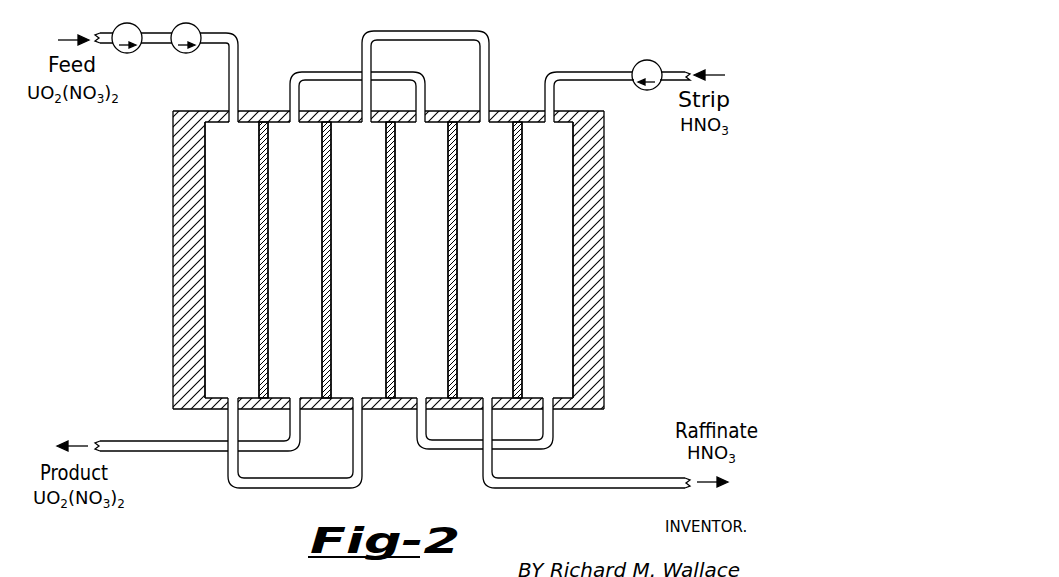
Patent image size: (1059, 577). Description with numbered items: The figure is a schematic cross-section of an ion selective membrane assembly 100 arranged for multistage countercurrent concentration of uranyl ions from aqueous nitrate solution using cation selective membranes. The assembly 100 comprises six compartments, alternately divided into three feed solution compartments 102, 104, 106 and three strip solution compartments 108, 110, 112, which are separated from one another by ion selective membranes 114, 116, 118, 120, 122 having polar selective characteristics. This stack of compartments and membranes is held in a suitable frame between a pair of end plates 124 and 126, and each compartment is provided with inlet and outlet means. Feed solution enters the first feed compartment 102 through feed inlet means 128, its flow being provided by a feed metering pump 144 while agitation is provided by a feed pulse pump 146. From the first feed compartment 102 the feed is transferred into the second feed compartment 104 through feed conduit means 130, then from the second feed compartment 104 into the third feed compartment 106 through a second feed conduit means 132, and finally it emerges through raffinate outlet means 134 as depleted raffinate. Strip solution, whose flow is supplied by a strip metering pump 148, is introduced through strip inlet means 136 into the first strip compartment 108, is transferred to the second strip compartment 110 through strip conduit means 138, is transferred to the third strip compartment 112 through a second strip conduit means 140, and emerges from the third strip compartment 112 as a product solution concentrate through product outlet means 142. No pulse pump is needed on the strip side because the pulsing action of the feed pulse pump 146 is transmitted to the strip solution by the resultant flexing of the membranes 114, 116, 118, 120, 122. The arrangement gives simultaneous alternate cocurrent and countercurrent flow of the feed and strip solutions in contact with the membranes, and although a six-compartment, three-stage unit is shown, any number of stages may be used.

The ion selective membrane assembly 100 is at (390, 276).
The first feed compartment 102 is at (250, 319).
The second feed compartment 104 is at (374, 319).
The third feed compartment 106 is at (502, 319).
The first strip compartment 108 is at (563, 356).
The second strip compartment 110 is at (436, 356).
The third strip compartment 112 is at (308, 356).
The ion selective membrane 114 is at (269, 188).
The ion selective membrane 116 is at (332, 188).
The ion selective membrane 118 is at (396, 188).
The ion selective membrane 120 is at (458, 188).
The ion selective membrane 122 is at (522, 188).
The end plate 124 is at (173, 268).
The end plate 126 is at (605, 268).
The feed inlet means 128 is at (214, 33).
The feed conduit means 130 is at (303, 488).
The second feed conduit means 132 is at (423, 31).
The raffinate outlet means 134 is at (534, 488).
The strip inlet means 136 is at (585, 72).
The strip conduit means 138 is at (504, 450).
The second strip conduit means 140 is at (313, 72).
The product outlet means 142 is at (167, 452).
The feed metering pump 144 is at (124, 52).
The feed pulse pump 146 is at (183, 52).
The strip metering pump 148 is at (655, 62).